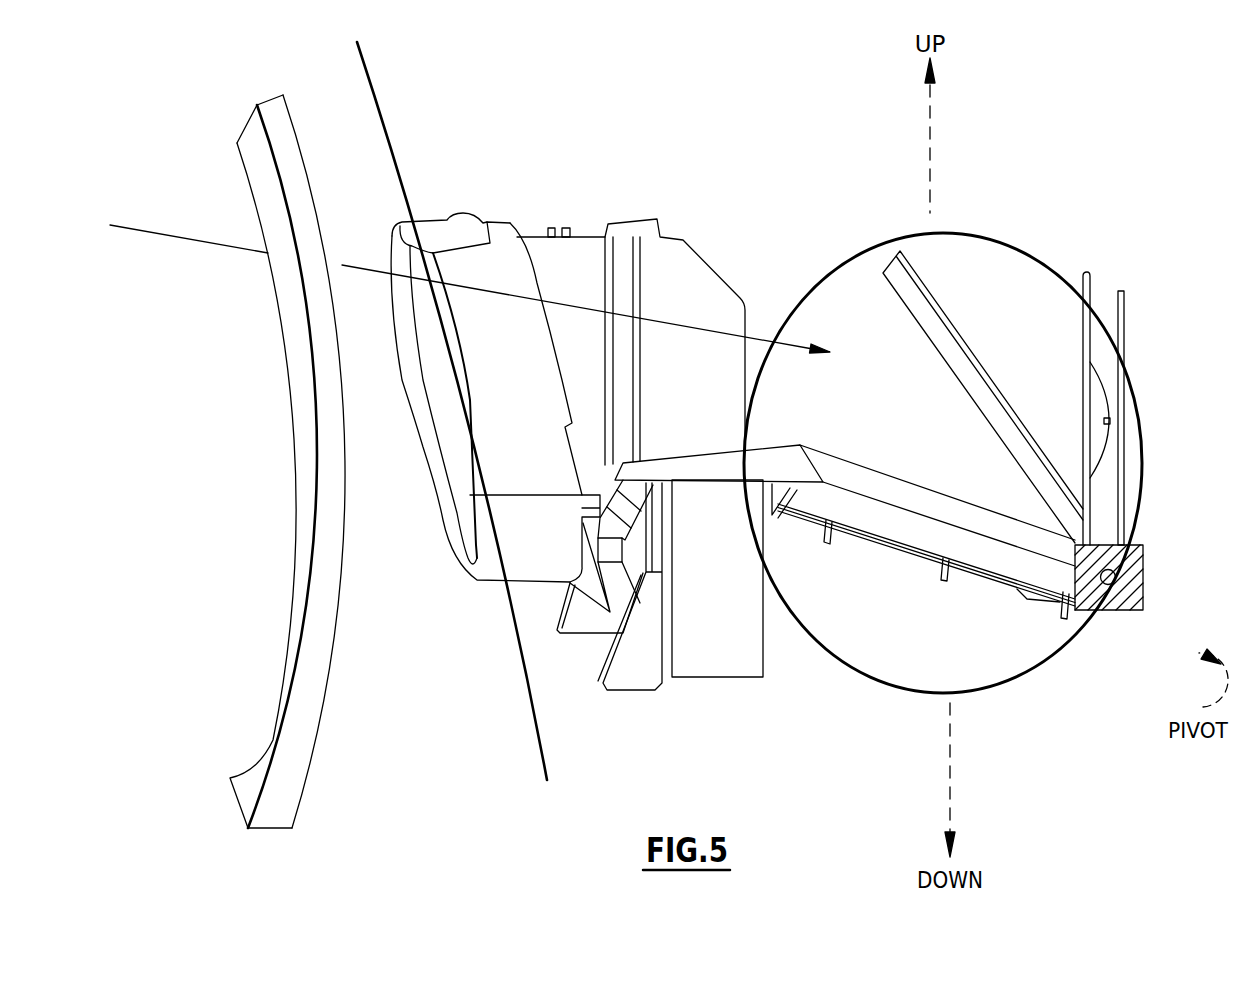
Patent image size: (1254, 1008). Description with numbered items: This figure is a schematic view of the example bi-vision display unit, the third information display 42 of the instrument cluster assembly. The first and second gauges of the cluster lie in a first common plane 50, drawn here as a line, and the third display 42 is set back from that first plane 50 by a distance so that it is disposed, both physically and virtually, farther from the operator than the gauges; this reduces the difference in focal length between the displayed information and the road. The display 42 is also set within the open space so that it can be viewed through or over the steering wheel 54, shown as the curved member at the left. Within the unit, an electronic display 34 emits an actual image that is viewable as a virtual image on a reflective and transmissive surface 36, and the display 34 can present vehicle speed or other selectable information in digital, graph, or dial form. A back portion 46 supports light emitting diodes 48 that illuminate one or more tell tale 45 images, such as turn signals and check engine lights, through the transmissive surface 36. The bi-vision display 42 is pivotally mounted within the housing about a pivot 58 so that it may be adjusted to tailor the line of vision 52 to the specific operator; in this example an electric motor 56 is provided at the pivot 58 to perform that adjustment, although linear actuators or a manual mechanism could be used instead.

The electronic display 34 is at (932, 505).
The reflective and transmissive surface 36 is at (908, 285).
The third information display 42 is at (824, 242).
The tell tale 45 is at (1072, 312).
The back portion 46 is at (1124, 437).
The light emitting diodes 48 is at (1092, 334).
The first common plane 50 is at (531, 718).
The line of vision 52 is at (205, 242).
The steering wheel 54 is at (258, 395).
The electric motor 56 is at (1143, 588).
The pivot 58 is at (1113, 583).